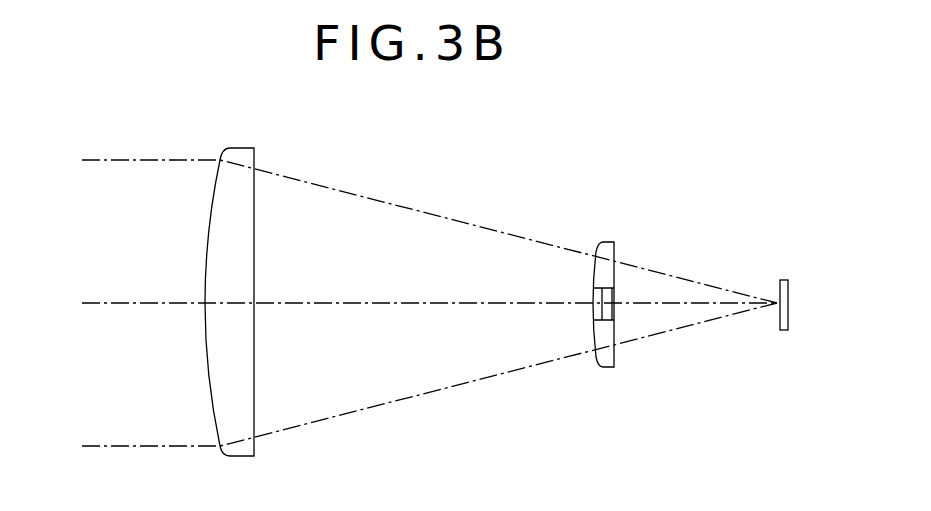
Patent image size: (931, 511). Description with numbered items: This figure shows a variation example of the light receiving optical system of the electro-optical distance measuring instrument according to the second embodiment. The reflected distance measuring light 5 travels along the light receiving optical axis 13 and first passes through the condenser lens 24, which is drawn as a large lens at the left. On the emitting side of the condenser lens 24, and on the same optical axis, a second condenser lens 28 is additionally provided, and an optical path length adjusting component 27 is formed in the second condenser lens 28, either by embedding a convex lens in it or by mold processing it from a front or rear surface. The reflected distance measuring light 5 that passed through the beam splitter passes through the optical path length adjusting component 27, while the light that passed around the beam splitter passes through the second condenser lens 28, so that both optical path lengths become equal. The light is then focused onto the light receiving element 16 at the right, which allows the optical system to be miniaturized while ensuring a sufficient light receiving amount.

The reflected distance measuring light 5 is at (427, 211).
The light receiving optical axis 13 is at (306, 302).
The light receiving element 16 is at (782, 278).
The condenser lens 24 is at (205, 267).
The optical path length adjusting component 27 is at (593, 296).
The second condenser lens 28 is at (605, 242).